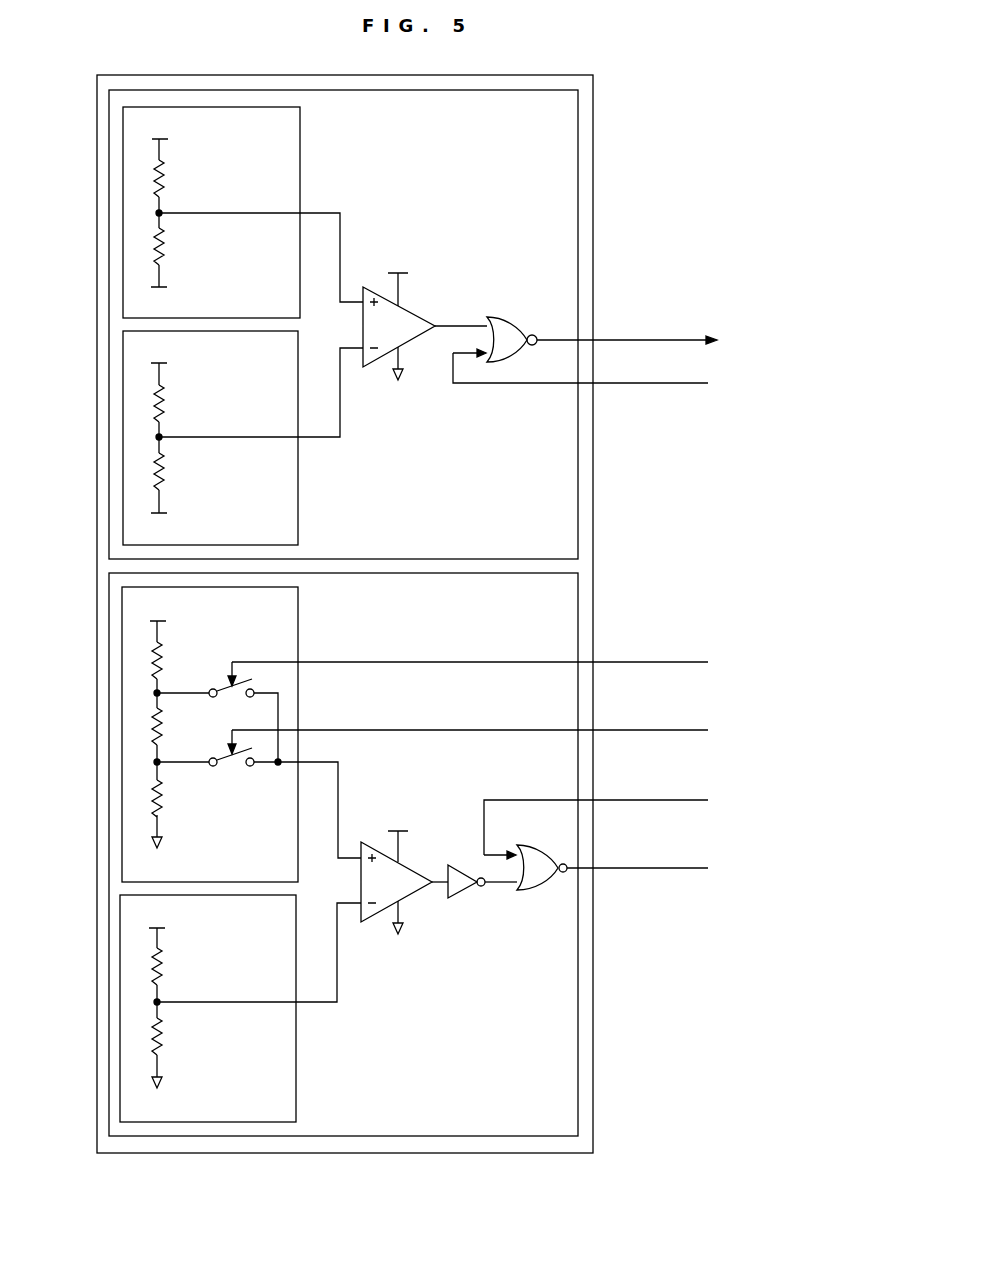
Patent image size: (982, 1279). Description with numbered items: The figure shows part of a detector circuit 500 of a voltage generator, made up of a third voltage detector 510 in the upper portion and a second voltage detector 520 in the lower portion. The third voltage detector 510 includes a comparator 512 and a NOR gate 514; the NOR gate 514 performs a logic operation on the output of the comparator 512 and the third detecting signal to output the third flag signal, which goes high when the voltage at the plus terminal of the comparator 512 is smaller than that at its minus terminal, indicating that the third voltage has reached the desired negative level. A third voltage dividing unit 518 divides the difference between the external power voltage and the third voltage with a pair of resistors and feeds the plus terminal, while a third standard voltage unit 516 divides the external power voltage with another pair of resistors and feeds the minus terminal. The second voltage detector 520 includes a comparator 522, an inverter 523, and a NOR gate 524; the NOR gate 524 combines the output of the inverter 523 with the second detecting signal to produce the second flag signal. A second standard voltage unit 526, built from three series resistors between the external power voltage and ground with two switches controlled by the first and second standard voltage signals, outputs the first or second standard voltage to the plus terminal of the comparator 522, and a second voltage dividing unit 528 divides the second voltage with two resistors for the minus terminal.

The detector circuit 500 is at (355, 75).
The third voltage detector 510 is at (109, 326).
The comparator 512 is at (410, 308).
The NOR gate 514 is at (502, 317).
The third standard voltage unit 516 is at (298, 503).
The third voltage dividing unit 518 is at (300, 143).
The second voltage detector 520 is at (109, 855).
The comparator 522 is at (405, 860).
The inverter 523 is at (463, 895).
The NOR gate 524 is at (535, 843).
The second standard voltage unit 526 is at (298, 623).
The second voltage dividing unit 528 is at (296, 1063).